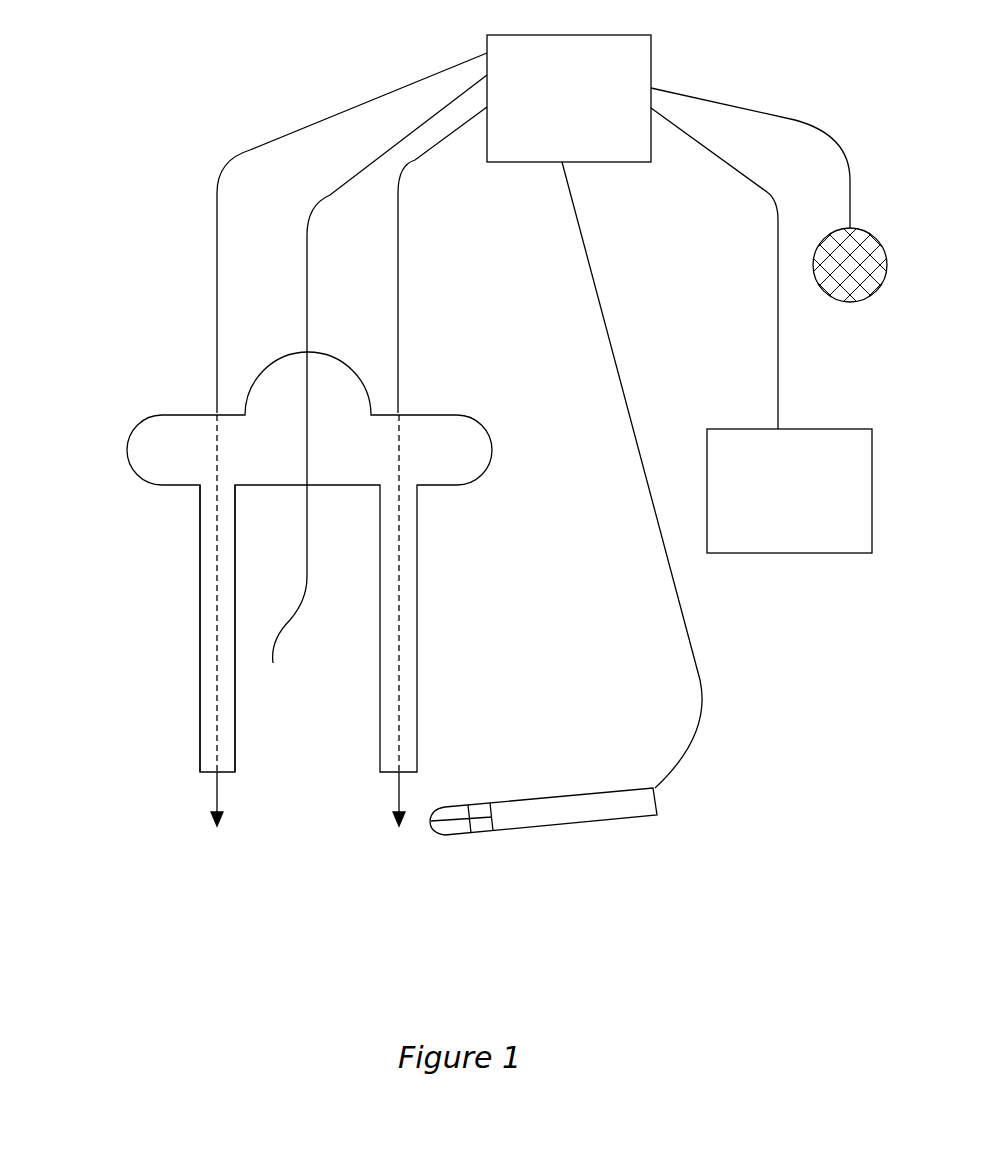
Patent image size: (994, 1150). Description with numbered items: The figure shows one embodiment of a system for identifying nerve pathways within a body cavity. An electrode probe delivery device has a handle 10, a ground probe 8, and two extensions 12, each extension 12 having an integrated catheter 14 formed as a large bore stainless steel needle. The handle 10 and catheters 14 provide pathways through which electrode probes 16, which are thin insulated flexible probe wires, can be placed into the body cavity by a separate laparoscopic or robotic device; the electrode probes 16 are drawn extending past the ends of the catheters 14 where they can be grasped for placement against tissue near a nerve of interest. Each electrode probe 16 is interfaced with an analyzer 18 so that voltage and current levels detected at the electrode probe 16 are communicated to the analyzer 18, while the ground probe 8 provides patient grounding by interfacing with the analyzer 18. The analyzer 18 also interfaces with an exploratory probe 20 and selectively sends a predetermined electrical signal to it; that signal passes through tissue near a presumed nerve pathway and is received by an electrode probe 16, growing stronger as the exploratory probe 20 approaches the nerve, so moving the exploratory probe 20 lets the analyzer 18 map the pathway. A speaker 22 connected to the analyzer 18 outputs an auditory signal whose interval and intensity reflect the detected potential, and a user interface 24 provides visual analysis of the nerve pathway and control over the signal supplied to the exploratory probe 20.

The probe 8 is at (305, 519).
The handle 10 is at (150, 415).
The extension 12 is at (200, 488).
The catheter 14 is at (200, 645).
The electrode probe 16 is at (399, 826).
The analyzer 18 is at (434, 224).
The exploratory probe 20 is at (622, 820).
The speaker 22 is at (868, 295).
The user interface 24 is at (761, 330).